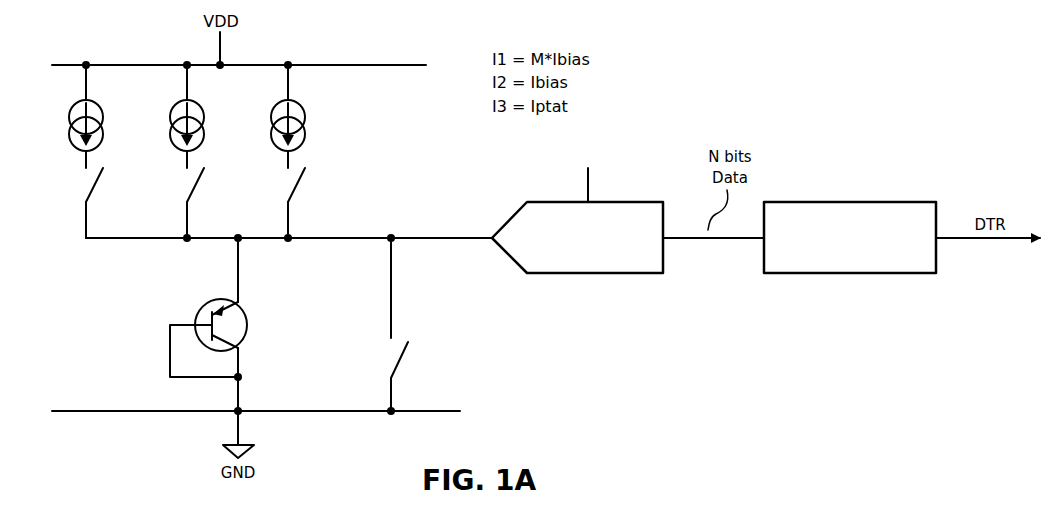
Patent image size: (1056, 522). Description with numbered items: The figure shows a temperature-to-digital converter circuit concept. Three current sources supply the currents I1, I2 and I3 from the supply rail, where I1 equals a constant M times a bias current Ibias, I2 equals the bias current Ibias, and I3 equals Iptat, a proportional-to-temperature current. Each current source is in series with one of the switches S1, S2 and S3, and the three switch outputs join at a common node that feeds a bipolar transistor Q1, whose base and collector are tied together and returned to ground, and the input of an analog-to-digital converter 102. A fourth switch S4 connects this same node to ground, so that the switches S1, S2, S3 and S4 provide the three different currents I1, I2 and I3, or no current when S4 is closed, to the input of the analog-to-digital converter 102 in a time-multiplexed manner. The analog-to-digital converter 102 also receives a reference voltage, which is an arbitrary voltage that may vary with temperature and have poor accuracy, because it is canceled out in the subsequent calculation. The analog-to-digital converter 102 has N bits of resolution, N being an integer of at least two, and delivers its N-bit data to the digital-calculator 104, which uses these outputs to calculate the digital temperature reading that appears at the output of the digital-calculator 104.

The analog-to-digital converter 102 is at (627, 202).
The digital-calculator 104 is at (850, 202).
The current I1 is at (97, 116).
The current I2 is at (198, 116).
The current I3 is at (299, 116).
The switch S1 is at (83, 203).
The switch S2 is at (183, 203).
The switch S3 is at (283, 203).
The switch S4 is at (385, 324).
The bipolar transistor Q1 is at (225, 324).